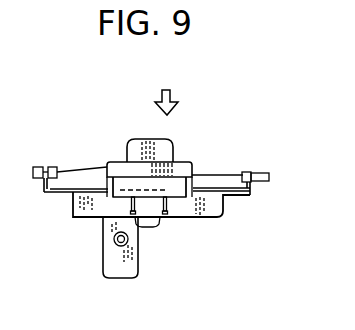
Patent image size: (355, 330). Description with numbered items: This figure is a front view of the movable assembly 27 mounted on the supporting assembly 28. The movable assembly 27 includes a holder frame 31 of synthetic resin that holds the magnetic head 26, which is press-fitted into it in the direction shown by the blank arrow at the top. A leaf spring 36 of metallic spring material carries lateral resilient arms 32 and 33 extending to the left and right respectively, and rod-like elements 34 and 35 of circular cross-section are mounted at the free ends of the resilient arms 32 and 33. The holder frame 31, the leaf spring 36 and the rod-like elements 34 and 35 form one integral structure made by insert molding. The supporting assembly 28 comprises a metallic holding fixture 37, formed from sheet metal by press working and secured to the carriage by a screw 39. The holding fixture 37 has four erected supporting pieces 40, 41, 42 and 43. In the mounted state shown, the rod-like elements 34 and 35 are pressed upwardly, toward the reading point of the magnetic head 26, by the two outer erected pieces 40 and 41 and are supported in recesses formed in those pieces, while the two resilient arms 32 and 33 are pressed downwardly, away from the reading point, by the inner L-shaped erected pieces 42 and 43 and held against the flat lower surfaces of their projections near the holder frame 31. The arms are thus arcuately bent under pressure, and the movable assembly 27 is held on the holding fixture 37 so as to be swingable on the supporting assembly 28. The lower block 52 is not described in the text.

The magnetic head 26 is at (145, 139).
The movable assembly 27 is at (178, 160).
The supporting assembly 28 is at (185, 222).
The holder frame 31 is at (116, 162).
The resilient arm 32 is at (78, 171).
The resilient arm 33 is at (223, 174).
The rod-like element 34 is at (34, 166).
The rod-like element 35 is at (266, 173).
The leaf spring 36 is at (128, 197).
The holding fixture 37 is at (212, 217).
The screw 39 is at (144, 228).
The erected supporting piece 40 is at (42, 193).
The erected supporting piece 41 is at (254, 186).
The erected supporting piece 42 is at (108, 163).
The erected supporting piece 43 is at (186, 160).
The mounting block 52 is at (123, 279).